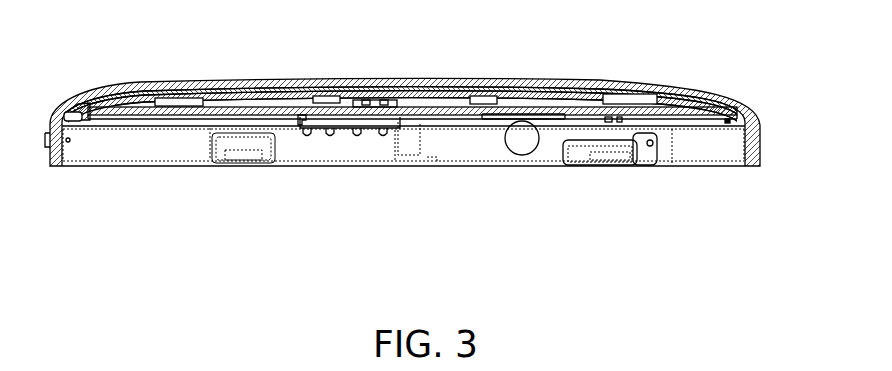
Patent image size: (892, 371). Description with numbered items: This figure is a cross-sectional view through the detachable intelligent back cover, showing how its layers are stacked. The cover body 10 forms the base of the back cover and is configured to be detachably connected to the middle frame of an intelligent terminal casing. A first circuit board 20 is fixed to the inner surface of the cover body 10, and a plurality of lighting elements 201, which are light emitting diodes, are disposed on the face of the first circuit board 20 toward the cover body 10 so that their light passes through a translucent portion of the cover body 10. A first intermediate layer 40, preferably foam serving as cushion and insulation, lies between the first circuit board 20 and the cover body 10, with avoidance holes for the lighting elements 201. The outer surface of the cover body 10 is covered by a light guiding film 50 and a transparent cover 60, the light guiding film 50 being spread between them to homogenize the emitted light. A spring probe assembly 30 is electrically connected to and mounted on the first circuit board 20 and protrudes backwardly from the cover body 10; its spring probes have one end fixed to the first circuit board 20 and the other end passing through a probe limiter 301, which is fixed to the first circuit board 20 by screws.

The cover body 10 is at (593, 182).
The first circuit board 20 is at (131, 137).
The spring probe assembly 30 is at (408, 168).
The probe limiter 301 is at (283, 148).
The first intermediate layer 40 is at (697, 127).
The light guiding film 50 is at (121, 62).
The transparent cover 60 is at (661, 53).
The lighting elements 201 is at (607, 93).